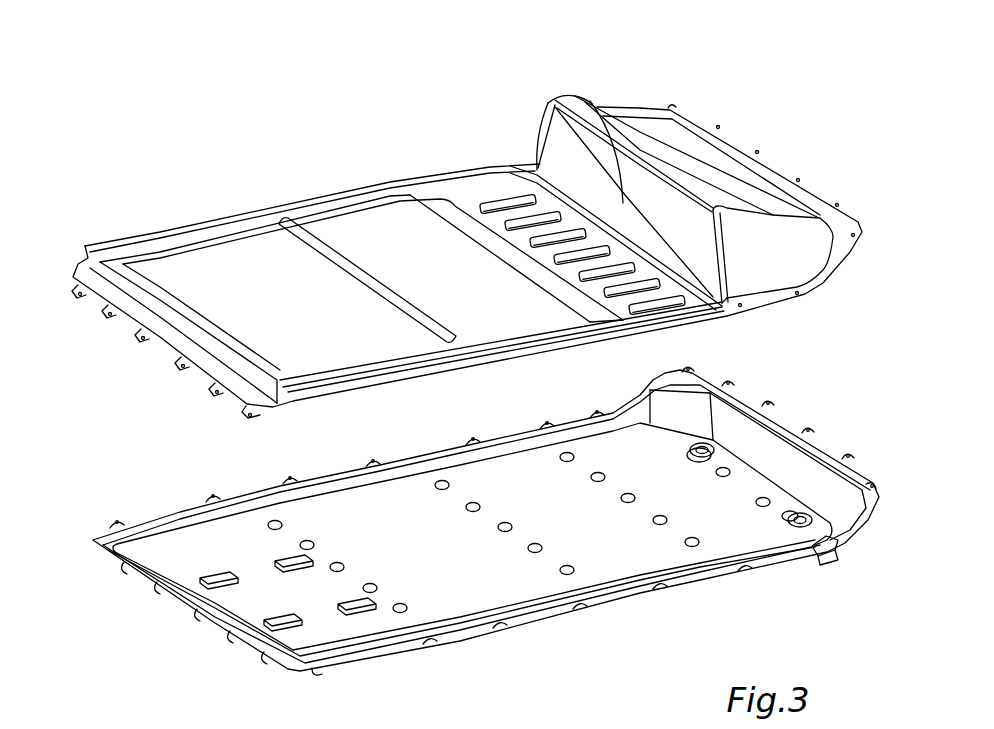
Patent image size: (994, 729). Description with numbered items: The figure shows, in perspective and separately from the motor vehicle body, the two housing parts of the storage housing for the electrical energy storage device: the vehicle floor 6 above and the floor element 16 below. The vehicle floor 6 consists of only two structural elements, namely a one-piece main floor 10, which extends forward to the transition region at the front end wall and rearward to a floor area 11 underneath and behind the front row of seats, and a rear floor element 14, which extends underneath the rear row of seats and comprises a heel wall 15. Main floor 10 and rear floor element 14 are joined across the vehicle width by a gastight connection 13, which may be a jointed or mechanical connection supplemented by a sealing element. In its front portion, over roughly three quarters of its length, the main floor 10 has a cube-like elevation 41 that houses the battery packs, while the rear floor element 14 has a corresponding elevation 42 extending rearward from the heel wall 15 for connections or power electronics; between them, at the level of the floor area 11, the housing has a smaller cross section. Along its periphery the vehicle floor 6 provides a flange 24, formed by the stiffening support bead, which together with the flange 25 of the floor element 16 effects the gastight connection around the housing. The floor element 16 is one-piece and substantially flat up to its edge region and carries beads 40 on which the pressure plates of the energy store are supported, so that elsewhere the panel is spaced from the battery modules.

The vehicle floor 6 is at (297, 132).
The main floor 10 is at (380, 164).
The floor area 11 is at (502, 162).
The gastight connection 13 is at (565, 193).
The rear floor element 14 is at (658, 78).
The heel wall 15 is at (626, 204).
The floor element 16 is at (618, 620).
The flange 24 is at (103, 300).
The flange 25 is at (512, 440).
The bead 40 is at (832, 545).
The cube-like elevation 41 is at (233, 205).
The elevation 42 is at (674, 102).